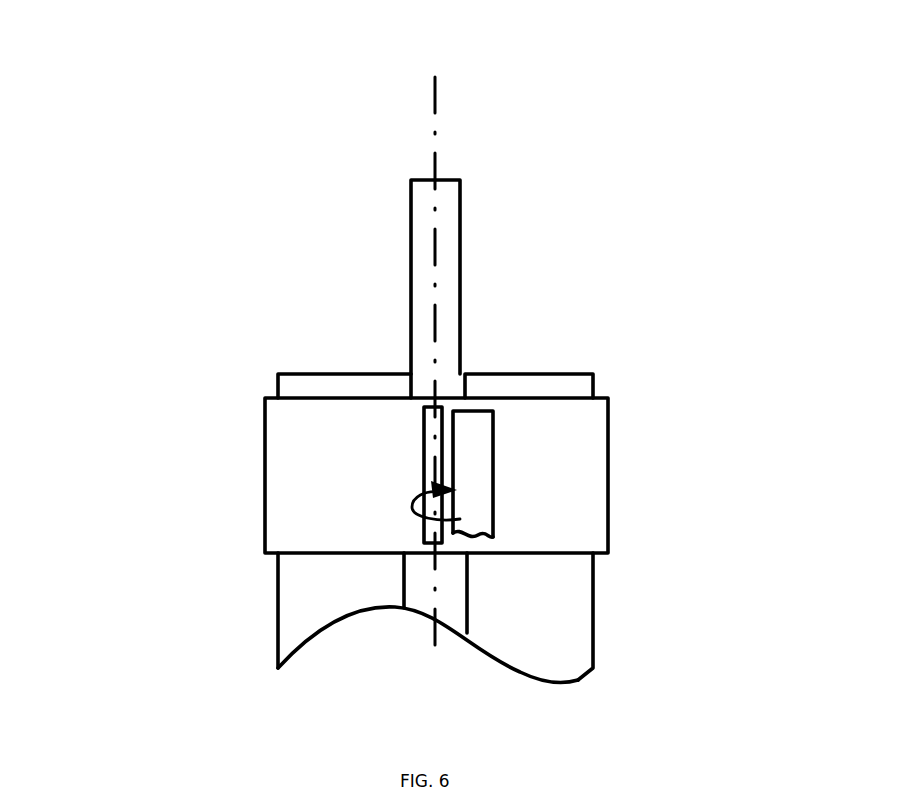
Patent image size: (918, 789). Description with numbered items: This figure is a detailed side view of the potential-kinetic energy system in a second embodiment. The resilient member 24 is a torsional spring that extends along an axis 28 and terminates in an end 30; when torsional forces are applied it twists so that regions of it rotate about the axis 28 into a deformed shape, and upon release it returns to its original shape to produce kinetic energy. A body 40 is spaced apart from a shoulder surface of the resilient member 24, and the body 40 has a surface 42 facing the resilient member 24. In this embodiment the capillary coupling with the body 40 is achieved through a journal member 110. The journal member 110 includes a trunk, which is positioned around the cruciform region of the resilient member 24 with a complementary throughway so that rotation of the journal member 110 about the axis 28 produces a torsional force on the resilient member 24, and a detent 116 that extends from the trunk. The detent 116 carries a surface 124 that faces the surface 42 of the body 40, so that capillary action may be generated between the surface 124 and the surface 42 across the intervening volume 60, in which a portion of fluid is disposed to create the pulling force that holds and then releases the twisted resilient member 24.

The axis 28 is at (435, 68).
The end 30 is at (205, 387).
The body 40 is at (466, 398).
The surface 42 is at (445, 520).
The resilient member 24 is at (593, 593).
The volume 60 is at (456, 576).
The journal member 110 is at (608, 517).
The detent 116 is at (424, 470).
The surface 124 is at (462, 459).